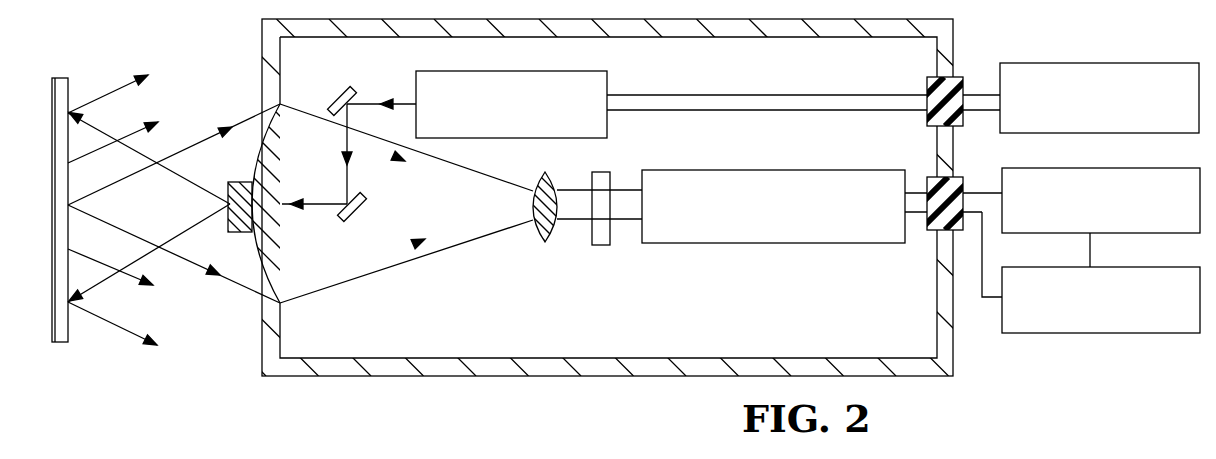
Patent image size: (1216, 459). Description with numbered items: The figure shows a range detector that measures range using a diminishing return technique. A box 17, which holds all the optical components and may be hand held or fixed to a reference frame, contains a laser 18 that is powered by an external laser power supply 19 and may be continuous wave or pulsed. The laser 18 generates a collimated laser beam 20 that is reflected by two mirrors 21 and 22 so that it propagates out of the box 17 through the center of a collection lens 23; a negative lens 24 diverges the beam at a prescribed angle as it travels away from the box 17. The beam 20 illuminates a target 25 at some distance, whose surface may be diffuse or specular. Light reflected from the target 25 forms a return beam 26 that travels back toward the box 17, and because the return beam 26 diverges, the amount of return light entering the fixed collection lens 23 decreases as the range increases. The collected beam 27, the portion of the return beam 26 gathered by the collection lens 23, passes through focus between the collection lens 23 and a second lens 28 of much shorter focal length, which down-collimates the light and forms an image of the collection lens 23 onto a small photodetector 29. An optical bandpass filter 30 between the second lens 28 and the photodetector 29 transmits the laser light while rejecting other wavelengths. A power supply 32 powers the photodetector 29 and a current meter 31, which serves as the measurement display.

The box 17 is at (262, 62).
The laser 18 is at (608, 85).
The laser power supply 19 is at (1025, 62).
The laser beam 20 is at (377, 102).
The mirror 21 is at (338, 94).
The mirror 22 is at (360, 223).
The collection lens 23 is at (283, 273).
The negative lens 24 is at (243, 233).
The target 25 is at (68, 90).
The return beam 26 is at (130, 278).
The collected beam 27 is at (457, 183).
The second lens 28 is at (533, 228).
The photodetector 29 is at (748, 247).
The optical bandpass filter 30 is at (600, 247).
The current meter 31 is at (1093, 335).
The power supply 32 is at (1047, 168).